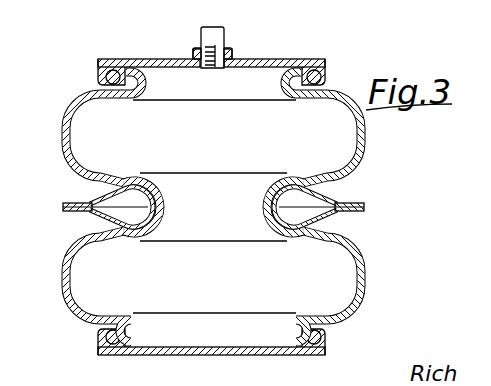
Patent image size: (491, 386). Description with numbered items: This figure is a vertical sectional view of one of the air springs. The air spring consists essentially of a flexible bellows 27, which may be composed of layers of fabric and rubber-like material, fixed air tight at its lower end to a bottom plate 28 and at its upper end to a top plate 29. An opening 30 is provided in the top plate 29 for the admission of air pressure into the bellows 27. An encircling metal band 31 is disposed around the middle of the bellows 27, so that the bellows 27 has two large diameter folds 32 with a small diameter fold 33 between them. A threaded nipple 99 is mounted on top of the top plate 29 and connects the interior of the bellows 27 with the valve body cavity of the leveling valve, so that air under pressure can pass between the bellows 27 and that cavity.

The flexible bellows 27 is at (214, 207).
The bottom plate 28 is at (100, 356).
The top plate 29 is at (100, 59).
The opening 30 is at (206, 68).
The encircling metal band 31 is at (98, 198).
The large diameter folds 32 is at (67, 117).
The small diameter fold 33 is at (163, 190).
The threaded nipple 99 is at (201, 35).